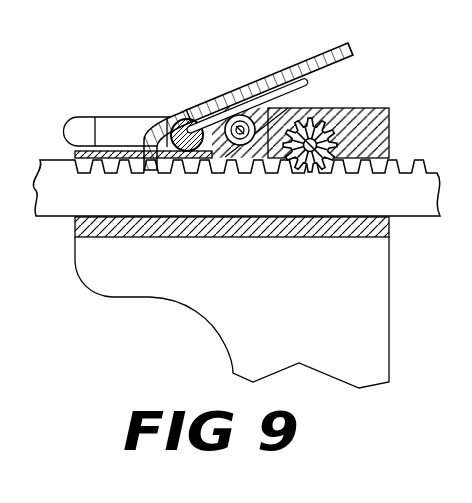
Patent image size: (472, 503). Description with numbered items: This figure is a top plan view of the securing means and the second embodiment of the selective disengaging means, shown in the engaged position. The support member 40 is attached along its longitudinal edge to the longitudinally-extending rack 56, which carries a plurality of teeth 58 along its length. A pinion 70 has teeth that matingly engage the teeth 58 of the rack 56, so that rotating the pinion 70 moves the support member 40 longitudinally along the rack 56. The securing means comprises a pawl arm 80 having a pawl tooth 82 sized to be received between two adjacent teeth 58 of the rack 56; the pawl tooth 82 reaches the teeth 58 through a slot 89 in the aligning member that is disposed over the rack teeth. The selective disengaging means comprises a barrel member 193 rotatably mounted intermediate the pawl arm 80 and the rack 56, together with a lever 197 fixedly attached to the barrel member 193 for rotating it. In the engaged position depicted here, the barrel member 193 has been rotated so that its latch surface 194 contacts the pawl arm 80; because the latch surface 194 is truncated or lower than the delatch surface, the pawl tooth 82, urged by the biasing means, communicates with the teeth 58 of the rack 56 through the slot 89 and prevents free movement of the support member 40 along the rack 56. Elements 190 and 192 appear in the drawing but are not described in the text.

The support member 40 is at (323, 331).
The rack 56 is at (428, 197).
The teeth 58 is at (438, 170).
The pinion 70 is at (339, 110).
The pawl arm 80 is at (344, 42).
The pawl tooth 82 is at (152, 165).
The slot 89 is at (145, 125).
The guide strip 190 is at (243, 167).
The lever arm 192 is at (306, 64).
The barrel member 193 is at (236, 113).
The latch surface 194 is at (186, 108).
The lever 197 is at (88, 117).